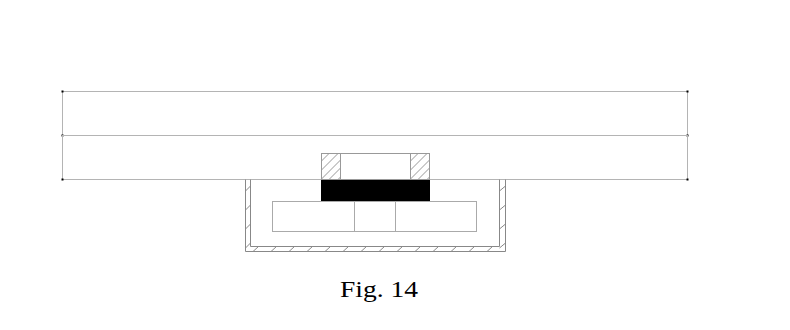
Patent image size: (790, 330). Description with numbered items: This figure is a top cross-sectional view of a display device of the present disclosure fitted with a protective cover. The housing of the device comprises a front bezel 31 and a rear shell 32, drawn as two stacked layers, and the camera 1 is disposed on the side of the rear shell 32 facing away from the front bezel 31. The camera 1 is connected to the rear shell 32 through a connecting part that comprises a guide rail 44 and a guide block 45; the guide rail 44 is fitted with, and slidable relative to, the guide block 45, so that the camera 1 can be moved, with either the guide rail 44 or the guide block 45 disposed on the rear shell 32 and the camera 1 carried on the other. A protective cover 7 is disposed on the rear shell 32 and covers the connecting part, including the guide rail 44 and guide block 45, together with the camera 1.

The camera 1 is at (314, 218).
The protective cover 7 is at (246, 204).
The front bezel 31 is at (510, 118).
The rear shell 32 is at (574, 172).
The guide rail 44 is at (420, 162).
The guide block 45 is at (340, 180).